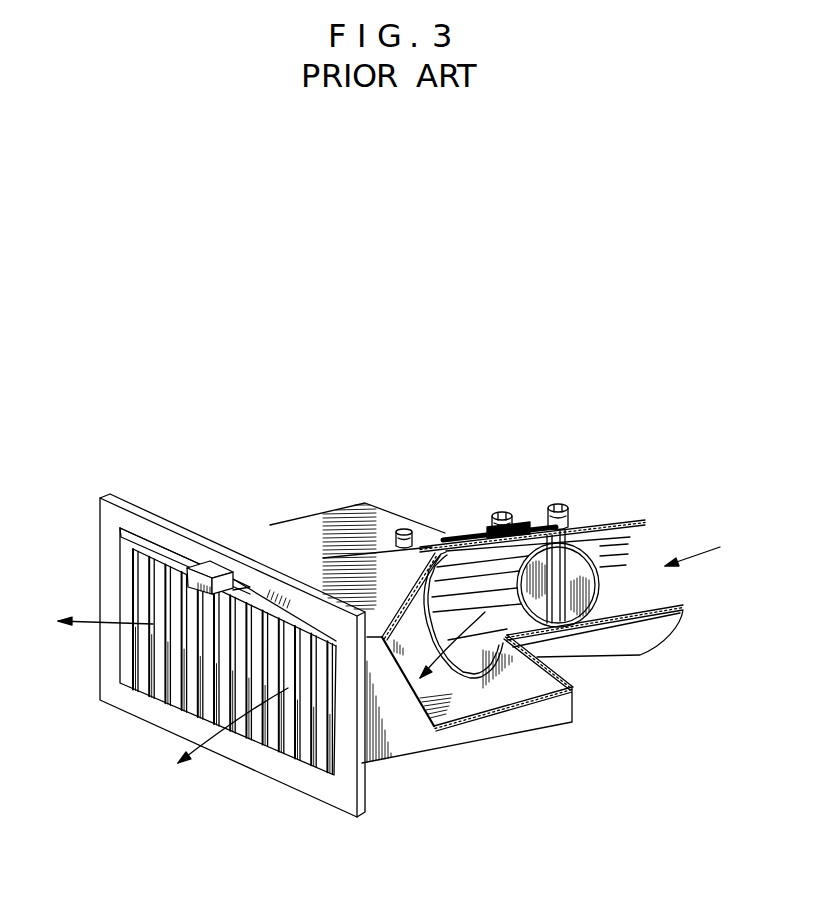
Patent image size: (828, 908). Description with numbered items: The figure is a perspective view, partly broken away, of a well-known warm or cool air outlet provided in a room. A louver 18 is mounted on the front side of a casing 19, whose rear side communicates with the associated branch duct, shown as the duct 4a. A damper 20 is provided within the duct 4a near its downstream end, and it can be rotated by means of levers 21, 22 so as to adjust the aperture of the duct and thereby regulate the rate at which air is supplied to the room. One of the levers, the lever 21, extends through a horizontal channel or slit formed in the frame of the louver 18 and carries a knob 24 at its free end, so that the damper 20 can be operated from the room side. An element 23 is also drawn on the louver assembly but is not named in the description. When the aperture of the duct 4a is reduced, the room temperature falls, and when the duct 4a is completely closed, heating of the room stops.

The louver 18 is at (142, 712).
The casing 19 is at (494, 730).
The damper 20 is at (591, 590).
The lever 21 is at (298, 572).
The lever 22 is at (536, 522).
The guide bar 23 is at (143, 532).
The knob 24 is at (219, 567).
The duct 4a is at (620, 657).